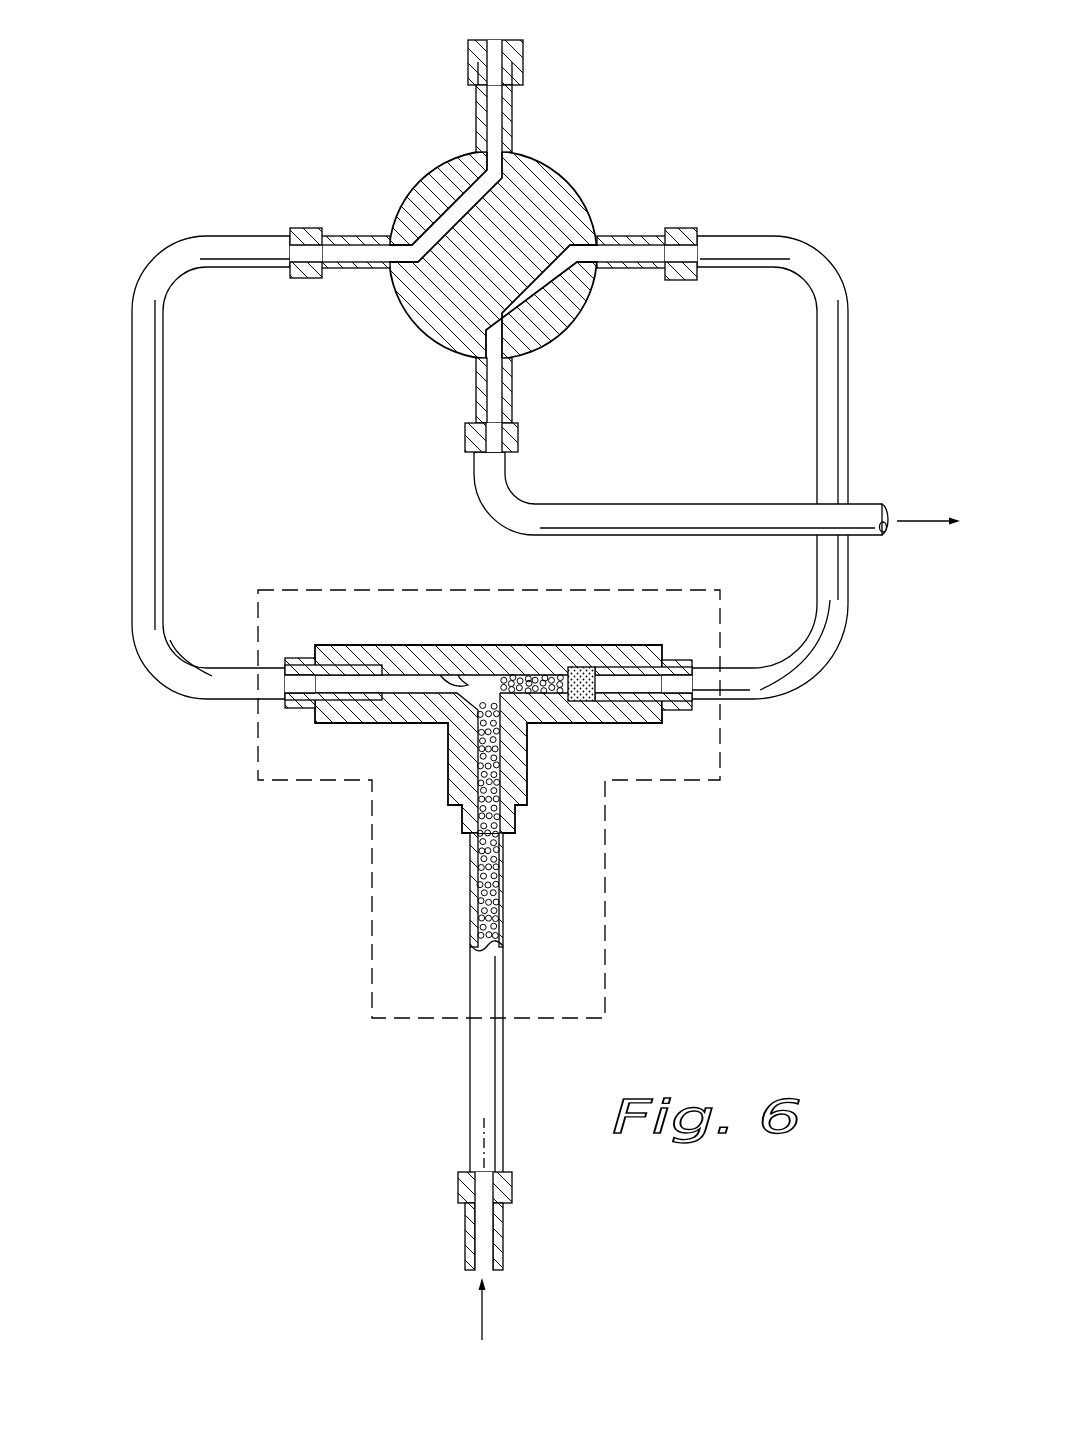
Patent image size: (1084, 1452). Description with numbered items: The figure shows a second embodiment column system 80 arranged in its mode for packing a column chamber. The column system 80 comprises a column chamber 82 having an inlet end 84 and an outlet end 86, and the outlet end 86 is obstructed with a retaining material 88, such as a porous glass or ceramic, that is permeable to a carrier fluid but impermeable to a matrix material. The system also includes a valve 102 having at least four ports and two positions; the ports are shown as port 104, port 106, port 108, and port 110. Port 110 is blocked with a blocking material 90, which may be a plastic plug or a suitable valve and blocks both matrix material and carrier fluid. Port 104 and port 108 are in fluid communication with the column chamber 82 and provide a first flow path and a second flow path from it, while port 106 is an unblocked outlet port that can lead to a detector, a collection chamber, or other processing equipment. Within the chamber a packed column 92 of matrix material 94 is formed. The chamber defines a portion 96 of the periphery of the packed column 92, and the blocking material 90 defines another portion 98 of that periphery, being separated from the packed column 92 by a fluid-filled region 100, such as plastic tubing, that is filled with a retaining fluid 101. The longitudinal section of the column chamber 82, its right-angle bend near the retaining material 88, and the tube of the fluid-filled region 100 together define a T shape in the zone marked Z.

The column system 80 is at (760, 112).
The column chamber 82 is at (465, 1095).
The inlet end 84 is at (468, 1282).
The outlet end 86 is at (490, 665).
The retaining material 88 is at (580, 666).
The blocking material 90 is at (480, 36).
The packed column 92 is at (503, 849).
The matrix material 94 is at (498, 881).
The portion of periphery of packed column 96 is at (435, 943).
The portion of periphery of packed column 98 is at (438, 676).
The fluid-filled region 100 is at (133, 637).
The retaining fluid 101 is at (335, 667).
The valve 102 is at (407, 325).
The port 104 is at (682, 284).
The port 106 is at (464, 437).
The port 108 is at (309, 228).
The port 110 is at (516, 106).
The zone Z is at (606, 939).